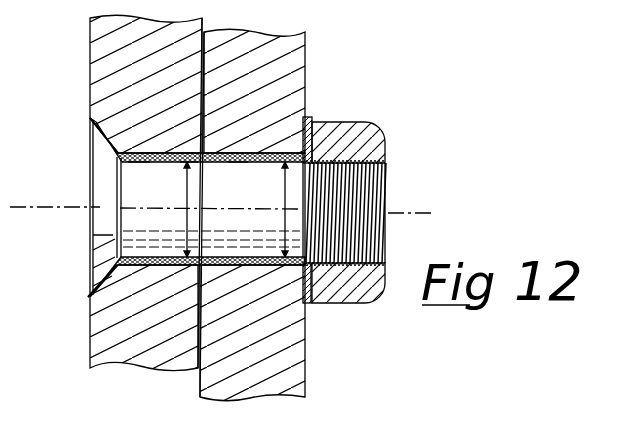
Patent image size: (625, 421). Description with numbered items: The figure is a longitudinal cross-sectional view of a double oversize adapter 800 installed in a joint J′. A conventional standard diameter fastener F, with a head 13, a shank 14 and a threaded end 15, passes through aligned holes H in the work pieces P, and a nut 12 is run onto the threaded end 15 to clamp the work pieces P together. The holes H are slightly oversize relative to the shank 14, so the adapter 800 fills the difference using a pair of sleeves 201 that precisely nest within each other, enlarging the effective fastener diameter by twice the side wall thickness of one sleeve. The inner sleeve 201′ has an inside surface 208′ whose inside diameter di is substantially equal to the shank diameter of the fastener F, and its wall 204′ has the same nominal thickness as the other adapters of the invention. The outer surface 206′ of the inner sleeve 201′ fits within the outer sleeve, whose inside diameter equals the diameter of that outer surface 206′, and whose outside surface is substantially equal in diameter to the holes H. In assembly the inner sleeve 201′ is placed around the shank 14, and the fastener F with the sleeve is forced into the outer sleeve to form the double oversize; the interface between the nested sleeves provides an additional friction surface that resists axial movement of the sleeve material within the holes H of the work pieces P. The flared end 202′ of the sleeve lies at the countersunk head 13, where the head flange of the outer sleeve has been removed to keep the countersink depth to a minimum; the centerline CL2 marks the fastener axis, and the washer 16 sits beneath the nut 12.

The sleeve 201 is at (86, 119).
The flared end of layer 202′ is at (93, 142).
The inner sleeve 201′ is at (187, 154).
The wall of the inner sleeve 204′ is at (297, 145).
The outer surface of the inner sleeve 206′ is at (189, 160).
The inside surface of the inner sleeve 208′ is at (238, 160).
The shank 14 is at (254, 218).
The nut 12 is at (360, 122).
The head 13 is at (95, 243).
The threaded end 15 is at (386, 241).
The washer 16 is at (305, 304).
The double oversize adapter 800 is at (82, 302).
The work pieces P is at (144, 362).
The holes H is at (154, 268).
The fastener F is at (394, 213).
The joint J′ is at (329, 97).
The center line CL2 is at (468, 213).
The inside diameter di is at (285, 192).